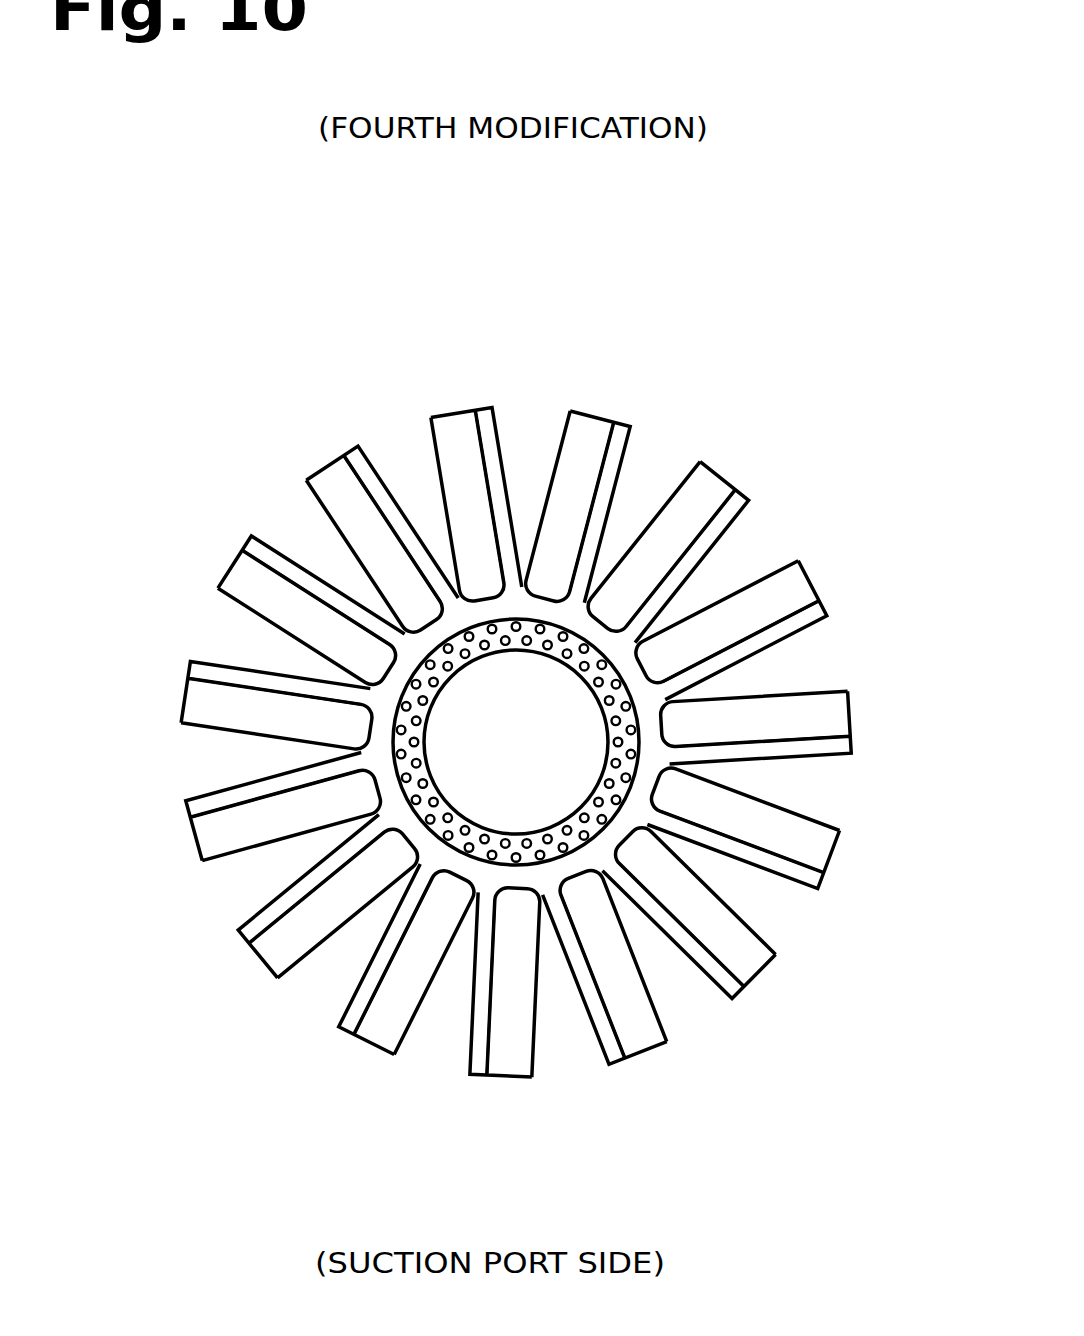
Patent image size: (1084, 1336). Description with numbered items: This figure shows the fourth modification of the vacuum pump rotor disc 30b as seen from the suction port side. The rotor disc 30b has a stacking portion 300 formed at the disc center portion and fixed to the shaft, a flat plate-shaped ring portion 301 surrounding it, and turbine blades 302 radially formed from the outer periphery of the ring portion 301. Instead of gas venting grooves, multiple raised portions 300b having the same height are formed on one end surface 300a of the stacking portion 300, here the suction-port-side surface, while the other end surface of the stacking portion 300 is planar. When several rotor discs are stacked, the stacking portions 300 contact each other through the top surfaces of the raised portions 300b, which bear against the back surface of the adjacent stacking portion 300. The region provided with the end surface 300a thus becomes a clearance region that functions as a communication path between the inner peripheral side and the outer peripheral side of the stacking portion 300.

The rotor disc 30b is at (556, 296).
The stacking portion 300 is at (495, 813).
The end surface 300a is at (598, 682).
The raised portions 300b is at (625, 686).
The ring portion 301 is at (633, 805).
The turbine blades 302 is at (772, 823).